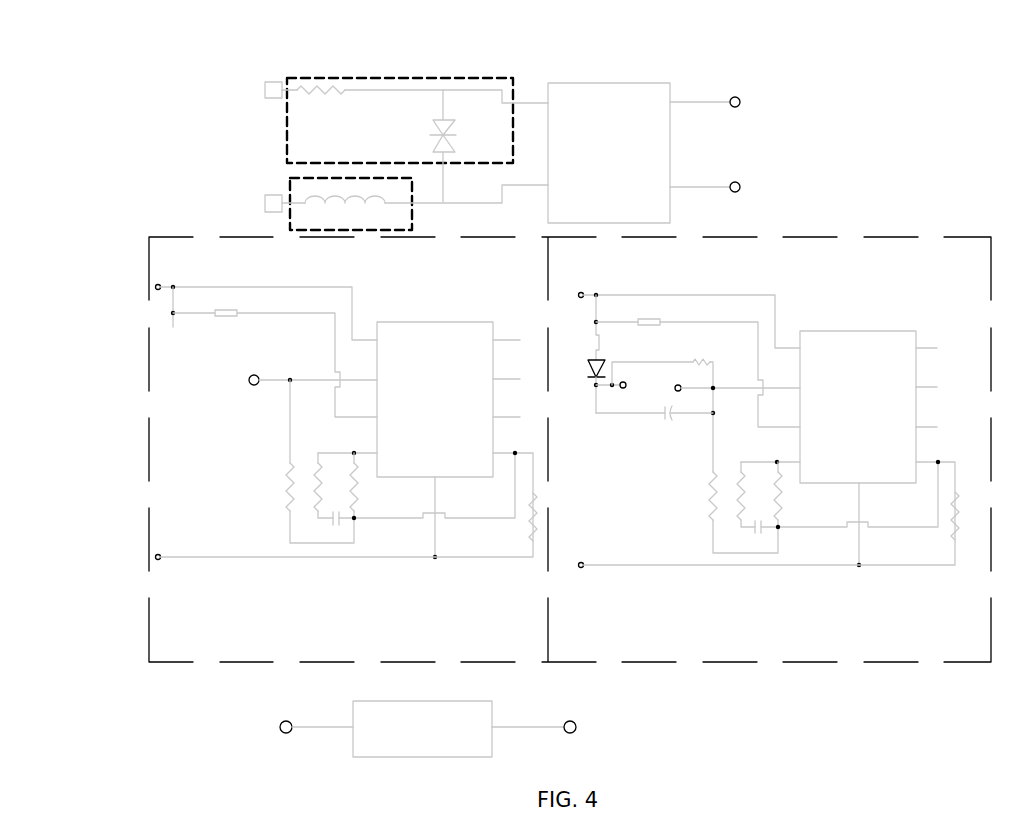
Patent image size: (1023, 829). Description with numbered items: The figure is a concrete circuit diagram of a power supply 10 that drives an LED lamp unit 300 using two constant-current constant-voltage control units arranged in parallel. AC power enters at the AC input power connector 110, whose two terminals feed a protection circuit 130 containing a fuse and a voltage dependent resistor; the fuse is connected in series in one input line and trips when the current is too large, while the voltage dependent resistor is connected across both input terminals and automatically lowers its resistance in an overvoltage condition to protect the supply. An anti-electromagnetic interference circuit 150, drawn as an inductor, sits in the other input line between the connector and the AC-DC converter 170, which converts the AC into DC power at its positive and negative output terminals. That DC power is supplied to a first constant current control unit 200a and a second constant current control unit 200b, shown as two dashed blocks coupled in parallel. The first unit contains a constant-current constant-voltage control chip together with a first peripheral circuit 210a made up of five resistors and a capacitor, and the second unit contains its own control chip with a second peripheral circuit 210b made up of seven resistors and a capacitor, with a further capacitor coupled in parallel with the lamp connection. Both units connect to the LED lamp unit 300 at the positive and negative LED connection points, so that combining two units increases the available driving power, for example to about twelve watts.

The power supply 10 is at (835, 107).
The AC input power connector 110 is at (240, 117).
The protection circuit 130 is at (408, 77).
The anti-electromagnetic interference circuit 150 is at (290, 185).
The AC-DC converter 170 is at (638, 82).
The first constant current control unit 200a is at (192, 237).
The second constant current control unit 200b is at (832, 237).
The first peripheral circuit 210a is at (276, 537).
The second peripheral circuit 210b is at (678, 537).
The LED lamp unit 300 is at (387, 757).